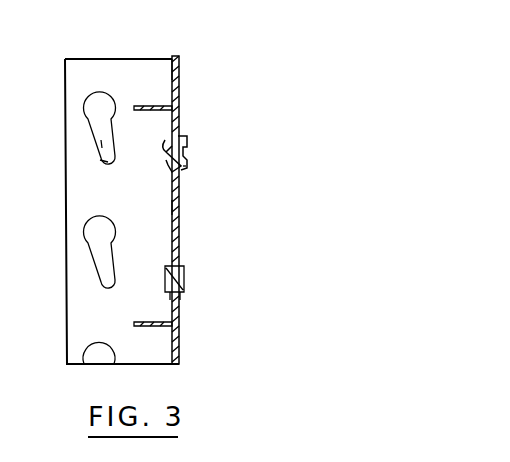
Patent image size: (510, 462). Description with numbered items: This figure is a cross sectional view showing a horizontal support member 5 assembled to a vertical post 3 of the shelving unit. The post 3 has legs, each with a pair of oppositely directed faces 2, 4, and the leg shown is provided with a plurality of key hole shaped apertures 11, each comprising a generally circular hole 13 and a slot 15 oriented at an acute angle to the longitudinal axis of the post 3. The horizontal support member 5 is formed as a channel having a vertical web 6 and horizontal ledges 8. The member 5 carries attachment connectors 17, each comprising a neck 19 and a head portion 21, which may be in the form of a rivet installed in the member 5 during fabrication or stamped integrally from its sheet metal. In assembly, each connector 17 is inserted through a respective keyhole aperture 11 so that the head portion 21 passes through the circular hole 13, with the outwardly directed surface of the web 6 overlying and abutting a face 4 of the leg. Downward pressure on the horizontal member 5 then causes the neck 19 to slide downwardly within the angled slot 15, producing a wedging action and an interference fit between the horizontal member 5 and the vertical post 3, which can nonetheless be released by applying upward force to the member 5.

The face 2 is at (180, 70).
The vertical post 3 is at (97, 70).
The face 4 is at (172, 70).
The horizontal support member 5 is at (164, 307).
The vertical web 6 is at (170, 208).
The horizontal ledge 8 is at (152, 113).
The key hole shaped aperture 11 is at (97, 138).
The circular hole 13 is at (98, 108).
The slot 15 is at (100, 167).
The attachment connector 17 is at (188, 158).
The neck 19 is at (186, 150).
The head portion 21 is at (186, 166).